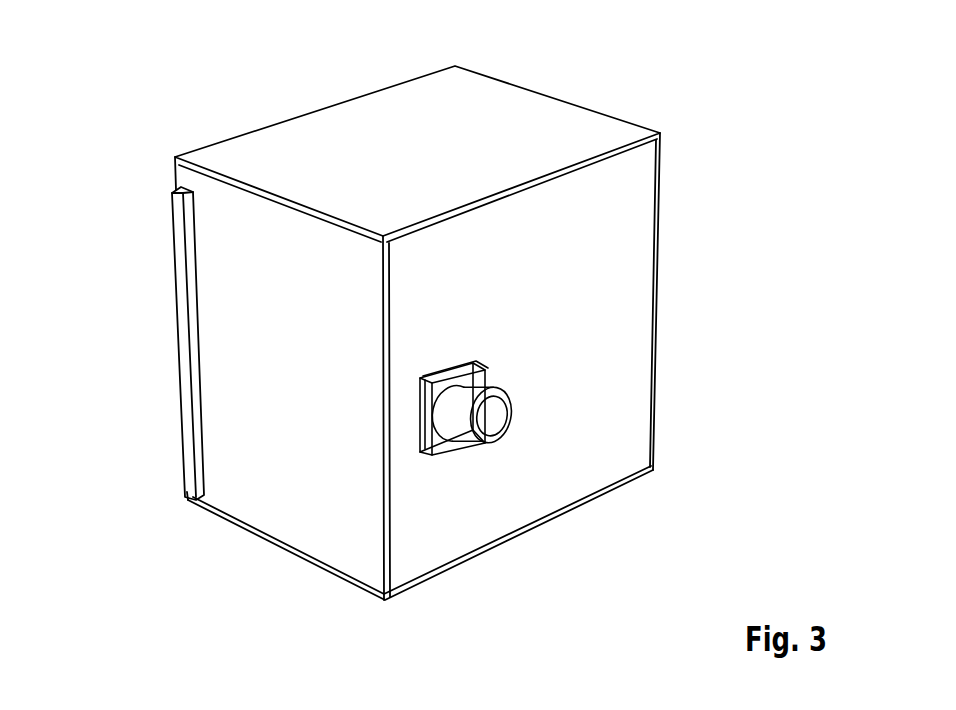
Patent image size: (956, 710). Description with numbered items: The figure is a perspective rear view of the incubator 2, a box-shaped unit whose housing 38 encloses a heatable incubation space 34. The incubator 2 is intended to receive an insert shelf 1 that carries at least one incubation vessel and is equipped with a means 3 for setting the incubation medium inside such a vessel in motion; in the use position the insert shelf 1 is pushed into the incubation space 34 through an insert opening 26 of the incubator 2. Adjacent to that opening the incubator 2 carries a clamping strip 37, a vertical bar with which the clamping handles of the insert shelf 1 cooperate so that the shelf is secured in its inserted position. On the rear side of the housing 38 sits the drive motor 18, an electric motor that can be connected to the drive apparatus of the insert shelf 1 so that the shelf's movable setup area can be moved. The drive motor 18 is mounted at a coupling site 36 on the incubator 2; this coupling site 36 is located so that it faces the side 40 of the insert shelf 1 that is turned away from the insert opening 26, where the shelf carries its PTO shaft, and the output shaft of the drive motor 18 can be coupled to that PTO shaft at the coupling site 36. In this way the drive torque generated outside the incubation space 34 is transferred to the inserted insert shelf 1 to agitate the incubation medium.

The insert shelf 1 is at (320, 373).
The incubator 2 is at (538, 131).
The means for setting incubation medium in motion 3 is at (347, 376).
The drive motor 18 is at (492, 397).
The insert opening 26 is at (170, 180).
The incubation space 34 is at (338, 163).
The coupling site 36 is at (438, 380).
The clamping strip 37 is at (180, 316).
The housing 38 is at (645, 243).
The side facing away from the insert opening 40 is at (593, 347).